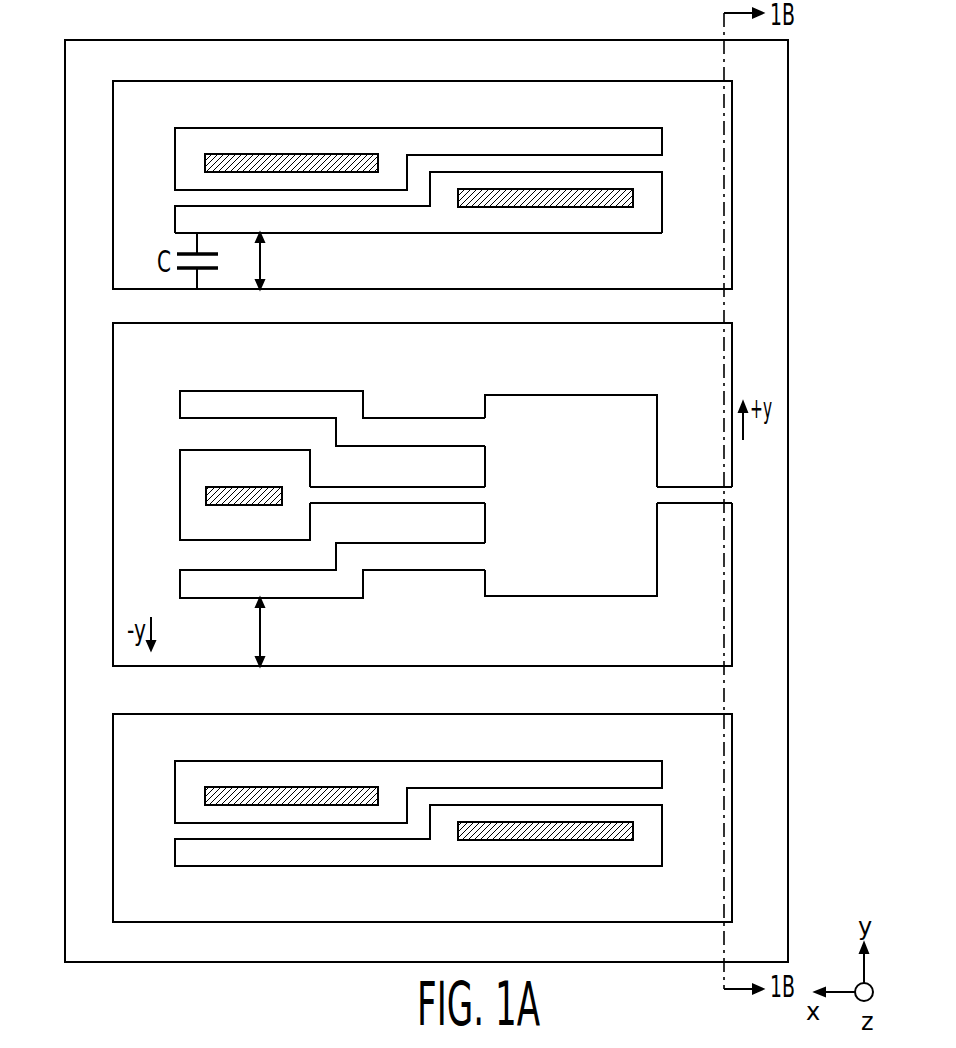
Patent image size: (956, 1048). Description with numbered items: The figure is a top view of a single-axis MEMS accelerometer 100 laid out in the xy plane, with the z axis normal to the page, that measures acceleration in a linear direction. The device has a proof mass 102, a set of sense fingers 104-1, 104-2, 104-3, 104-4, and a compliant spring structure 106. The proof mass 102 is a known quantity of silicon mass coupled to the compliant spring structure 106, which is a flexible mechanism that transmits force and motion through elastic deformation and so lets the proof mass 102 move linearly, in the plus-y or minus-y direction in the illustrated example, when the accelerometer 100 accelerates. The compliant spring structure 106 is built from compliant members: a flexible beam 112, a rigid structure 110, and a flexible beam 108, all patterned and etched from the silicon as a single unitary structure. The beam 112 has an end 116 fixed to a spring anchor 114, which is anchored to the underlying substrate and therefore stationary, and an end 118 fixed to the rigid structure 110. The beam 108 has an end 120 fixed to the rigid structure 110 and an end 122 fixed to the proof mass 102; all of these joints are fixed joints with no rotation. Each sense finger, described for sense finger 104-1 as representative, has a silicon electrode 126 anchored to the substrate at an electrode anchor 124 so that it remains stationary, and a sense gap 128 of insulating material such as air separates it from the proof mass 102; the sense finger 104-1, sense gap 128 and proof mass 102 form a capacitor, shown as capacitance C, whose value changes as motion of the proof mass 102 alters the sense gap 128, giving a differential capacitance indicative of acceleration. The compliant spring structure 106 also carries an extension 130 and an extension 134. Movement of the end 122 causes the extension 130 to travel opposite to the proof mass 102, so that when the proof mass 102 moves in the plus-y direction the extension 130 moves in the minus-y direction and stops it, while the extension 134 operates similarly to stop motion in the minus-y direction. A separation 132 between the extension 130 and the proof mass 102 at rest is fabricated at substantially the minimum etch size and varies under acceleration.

The MEMS accelerometer 100 is at (810, 40).
The proof mass 102 is at (788, 212).
The sense finger 104-1 is at (662, 208).
The sense finger 104-2 is at (691, 124).
The sense finger 104-3 is at (691, 758).
The sense finger 104-4 is at (662, 840).
The compliant spring structure 106 is at (569, 364).
The flexible beam 108 is at (692, 487).
The rigid structure 110 is at (590, 504).
The flexible beam 112 is at (396, 507).
The spring anchor 114 is at (250, 486).
The end of beam 112 116 is at (307, 496).
The end of beam 112 118 is at (485, 497).
The end of beam 108 120 is at (662, 495).
The end of beam 108 122 is at (733, 495).
The electrode anchor 124 is at (570, 203).
The electrode 126 is at (388, 234).
The sense gap 128 is at (263, 259).
The extension 130 is at (397, 572).
The separation 132 is at (263, 632).
The extension 134 is at (442, 418).